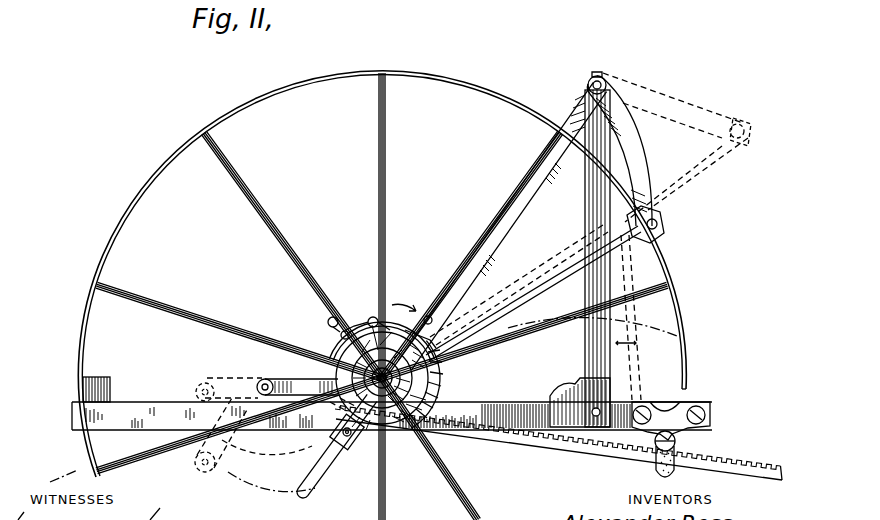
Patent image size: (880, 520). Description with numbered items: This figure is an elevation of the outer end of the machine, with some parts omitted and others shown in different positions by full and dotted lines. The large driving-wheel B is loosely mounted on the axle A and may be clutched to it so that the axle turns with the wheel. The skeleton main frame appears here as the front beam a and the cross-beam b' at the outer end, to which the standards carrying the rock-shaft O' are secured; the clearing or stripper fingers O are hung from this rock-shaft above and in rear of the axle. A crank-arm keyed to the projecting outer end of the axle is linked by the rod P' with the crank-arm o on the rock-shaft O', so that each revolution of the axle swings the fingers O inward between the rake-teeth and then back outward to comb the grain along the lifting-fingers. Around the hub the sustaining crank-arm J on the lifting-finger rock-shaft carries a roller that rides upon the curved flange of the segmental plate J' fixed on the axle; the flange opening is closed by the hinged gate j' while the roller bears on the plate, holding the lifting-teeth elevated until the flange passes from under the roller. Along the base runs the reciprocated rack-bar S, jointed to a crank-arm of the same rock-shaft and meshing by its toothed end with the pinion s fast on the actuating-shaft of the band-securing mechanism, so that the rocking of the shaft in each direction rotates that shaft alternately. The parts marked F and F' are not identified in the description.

The driving-wheel B is at (382, 270).
The axle A is at (382, 377).
The crank-arm J is at (378, 375).
The segmental plate J' is at (368, 311).
The gate j' is at (364, 309).
The swinging fingers O is at (502, 225).
The rock-shaft O' is at (606, 78).
The crank-arm o is at (625, 159).
The rod P' is at (533, 293).
The front beam a is at (96, 380).
The cross-beam b' is at (567, 402).
The rack-bar S is at (558, 443).
The pinion s is at (676, 477).
The crank F is at (202, 435).
The handle F' is at (337, 444).